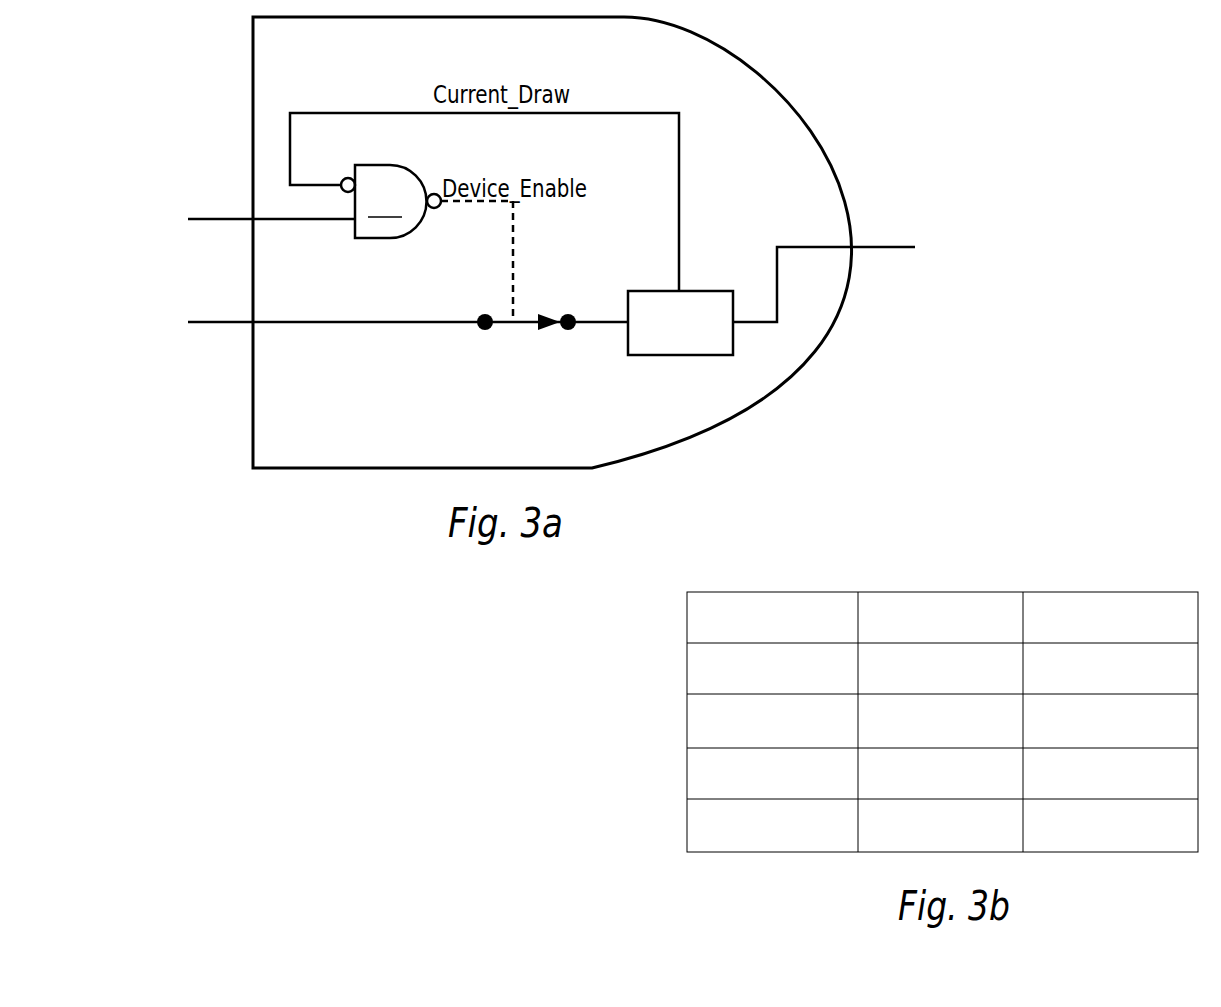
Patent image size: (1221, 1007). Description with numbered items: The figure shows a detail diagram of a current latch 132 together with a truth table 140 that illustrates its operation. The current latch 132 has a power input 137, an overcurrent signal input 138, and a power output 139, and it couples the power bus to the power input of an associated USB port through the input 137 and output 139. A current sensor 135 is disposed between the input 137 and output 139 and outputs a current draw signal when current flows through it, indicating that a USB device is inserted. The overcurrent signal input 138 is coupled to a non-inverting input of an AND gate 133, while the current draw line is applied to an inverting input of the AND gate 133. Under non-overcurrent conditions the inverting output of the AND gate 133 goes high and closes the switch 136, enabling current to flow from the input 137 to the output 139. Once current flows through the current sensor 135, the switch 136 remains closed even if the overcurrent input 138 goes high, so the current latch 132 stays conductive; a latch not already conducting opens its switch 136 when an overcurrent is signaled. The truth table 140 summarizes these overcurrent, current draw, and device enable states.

In FIG. 3A, the current latch 132 is at (757, 82).
In FIG. 3A, the AND gate 133 is at (391, 201).
In FIG. 3A, the current sensor 135 is at (672, 355).
In FIG. 3A, the switch 136 is at (528, 322).
In FIG. 3A, the power input 137 is at (223, 322).
In FIG. 3A, the overcurrent signal input 138 is at (232, 219).
In FIG. 3A, the power output 139 is at (870, 247).
In FIG. 3B, the truth table 140 is at (965, 592).